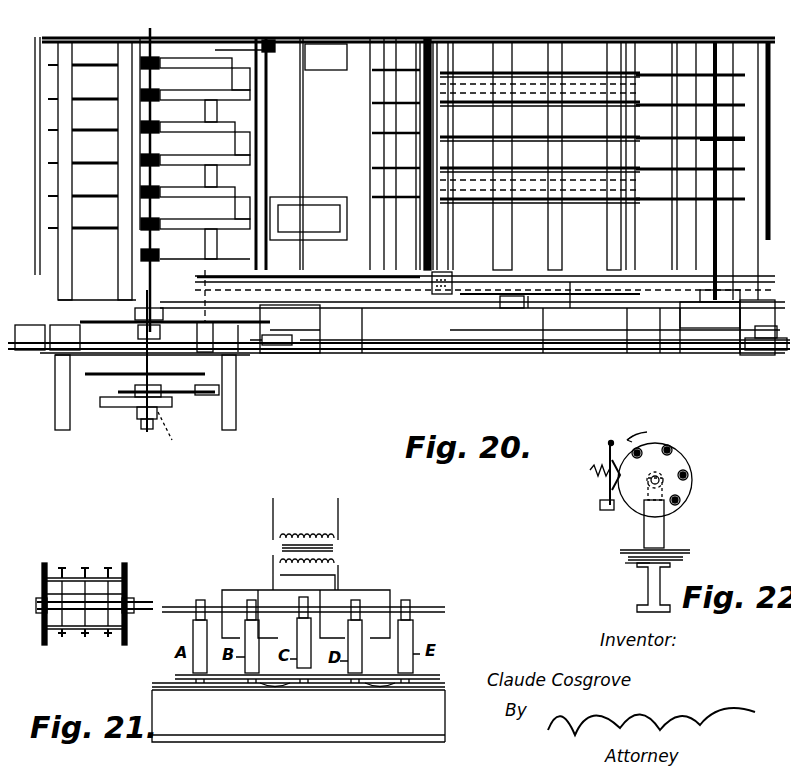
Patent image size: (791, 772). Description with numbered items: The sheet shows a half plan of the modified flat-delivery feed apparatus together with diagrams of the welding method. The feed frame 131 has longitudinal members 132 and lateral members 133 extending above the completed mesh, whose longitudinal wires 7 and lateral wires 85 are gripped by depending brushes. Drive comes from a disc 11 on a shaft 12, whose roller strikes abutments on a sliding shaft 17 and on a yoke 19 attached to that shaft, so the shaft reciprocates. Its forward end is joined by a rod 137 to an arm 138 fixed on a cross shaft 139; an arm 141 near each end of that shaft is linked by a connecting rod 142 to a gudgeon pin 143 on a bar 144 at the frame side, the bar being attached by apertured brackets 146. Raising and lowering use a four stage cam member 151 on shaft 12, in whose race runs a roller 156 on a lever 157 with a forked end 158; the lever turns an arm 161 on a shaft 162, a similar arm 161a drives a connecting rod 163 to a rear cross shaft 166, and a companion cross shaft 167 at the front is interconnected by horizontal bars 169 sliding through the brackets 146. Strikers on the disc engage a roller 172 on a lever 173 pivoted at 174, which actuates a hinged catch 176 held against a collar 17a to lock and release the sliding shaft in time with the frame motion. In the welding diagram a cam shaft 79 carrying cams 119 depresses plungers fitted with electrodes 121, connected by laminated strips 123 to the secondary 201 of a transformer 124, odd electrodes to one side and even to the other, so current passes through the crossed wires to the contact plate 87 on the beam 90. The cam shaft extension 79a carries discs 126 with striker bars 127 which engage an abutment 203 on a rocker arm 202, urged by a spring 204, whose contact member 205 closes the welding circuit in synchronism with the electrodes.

In FIG. 20, the longitudinal wires or rods 7 is at (50, 190).
In FIG. 21, the longitudinal wires or rods 7 is at (265, 683).
In FIG. 22, the longitudinal wires or rods 7 is at (627, 562).
In FIG. 20, the disc 11 is at (100, 320).
In FIG. 20, the shaft 12 is at (147, 432).
In FIG. 20, the sliding shaft 17 is at (78, 328).
In FIG. 20, the collar 17a is at (310, 358).
In FIG. 20, the yoke or frame 19 is at (50, 352).
In FIG. 20, the cam shaft 79 is at (150, 37).
In FIG. 21, the cam shaft 79 is at (445, 610).
In FIG. 21, the cam shaft extension 79a is at (147, 612).
In FIG. 20, the lateral wire 85 is at (265, 42).
In FIG. 21, the lateral wire 85 is at (420, 678).
In FIG. 22, the lateral wire 85 is at (664, 549).
In FIG. 21, the contact plate 87 is at (445, 688).
In FIG. 22, the contact plate 87 is at (683, 558).
In FIG. 21, the beam 90 is at (440, 716).
In FIG. 22, the beam 90 is at (648, 590).
In FIG. 20, the cams 119 is at (141, 160).
In FIG. 21, the cams 119 is at (250, 600).
In FIG. 21, the electrode 121 is at (245, 663).
In FIG. 22, the electrode 121 is at (664, 525).
In FIG. 20, the laminated conducting strips 123 is at (193, 195).
In FIG. 20, the transformer 124 is at (333, 197).
In FIG. 21, the transformer 124 is at (304, 530).
In FIG. 21, the discs 126 is at (46, 565).
In FIG. 22, the discs 126 is at (688, 455).
In FIG. 21, the bars 127 is at (122, 594).
In FIG. 22, the bars 127 is at (667, 446).
In FIG. 20, the frame 131 is at (512, 308).
In FIG. 20, the longitudinal members 132 is at (535, 181).
In FIG. 20, the lateral members 133 is at (443, 45).
In FIG. 20, the rod 137 is at (460, 350).
In FIG. 20, the arm 138 is at (757, 342).
In FIG. 20, the cross shaft 139 is at (768, 42).
In FIG. 20, the arm 141 is at (748, 302).
In FIG. 20, the connecting rod 142 is at (678, 308).
In FIG. 20, the gudgeon pin 143 is at (528, 308).
In FIG. 20, the bar 144 is at (570, 290).
In FIG. 20, the apertured brackets 146 is at (452, 298).
In FIG. 20, the four stage cam member 151 is at (100, 405).
In FIG. 20, the roller 156 is at (168, 437).
In FIG. 20, the lever 157 is at (205, 394).
In FIG. 20, the forked end 158 is at (135, 392).
In FIG. 20, the arm 161 is at (213, 395).
In FIG. 20, the arm 161a is at (200, 278).
In FIG. 20, the shaft 162 is at (222, 400).
In FIG. 20, the connecting rod 163 is at (340, 276).
In FIG. 20, the shaft 166 is at (434, 33).
In FIG. 20, the companion cross shaft 167 is at (715, 42).
In FIG. 20, the horizontal bar 169 is at (537, 282).
In FIG. 20, the roller 172 is at (210, 322).
In FIG. 20, the lever 173 is at (265, 355).
In FIG. 20, the pivot 174 is at (238, 342).
In FIG. 20, the catch 176 is at (320, 322).
In FIG. 21, the secondary 201 is at (338, 555).
In FIG. 21, the rocker arm 202 is at (112, 566).
In FIG. 22, the rocker arm 202 is at (608, 444).
In FIG. 22, the abutment 203 is at (608, 480).
In FIG. 22, the spring 204 is at (592, 468).
In FIG. 21, the contact member 205 is at (110, 640).
In FIG. 22, the contact member 205 is at (606, 510).